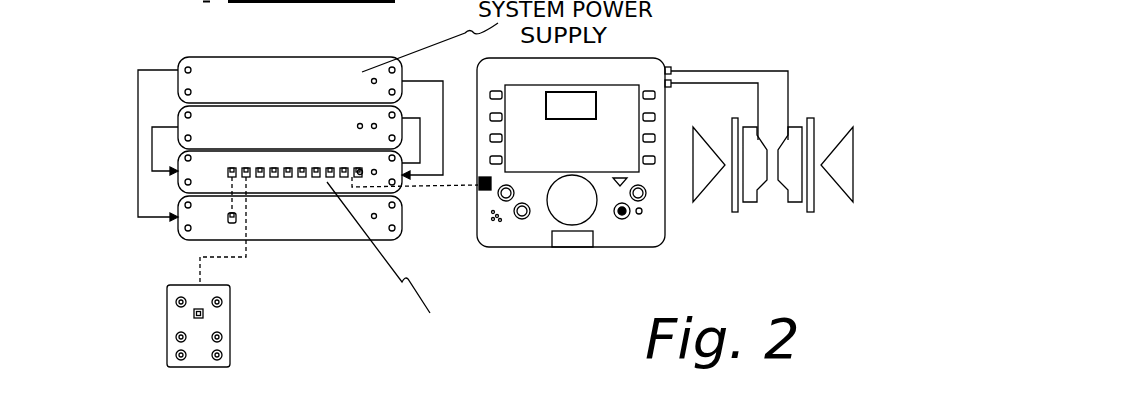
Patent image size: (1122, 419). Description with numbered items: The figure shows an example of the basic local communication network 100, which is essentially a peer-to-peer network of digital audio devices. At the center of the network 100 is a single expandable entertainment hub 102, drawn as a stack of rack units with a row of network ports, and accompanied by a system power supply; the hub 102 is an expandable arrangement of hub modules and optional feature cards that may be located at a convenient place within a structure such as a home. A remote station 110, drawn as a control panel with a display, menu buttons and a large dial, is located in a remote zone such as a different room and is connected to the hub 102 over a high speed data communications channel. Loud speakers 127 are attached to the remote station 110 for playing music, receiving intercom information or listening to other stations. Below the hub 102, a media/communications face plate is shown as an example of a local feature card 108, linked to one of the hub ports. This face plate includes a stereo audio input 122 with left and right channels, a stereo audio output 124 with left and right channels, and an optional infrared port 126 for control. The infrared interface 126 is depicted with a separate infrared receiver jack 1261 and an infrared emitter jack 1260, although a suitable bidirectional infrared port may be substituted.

The basic local communication network 100 is at (492, 298).
The expandable entertainment hub 102 is at (226, 179).
The local feature card 108 is at (210, 282).
The remote station 110 is at (518, 248).
The stereo audio input 122 is at (183, 367).
The stereo audio output 124 is at (218, 367).
The infrared (IR) port 126 is at (158, 304).
The infrared emitter jack 1260 is at (175, 290).
The infrared receiver jack 1261 is at (222, 302).
The loud speakers 127 is at (790, 223).